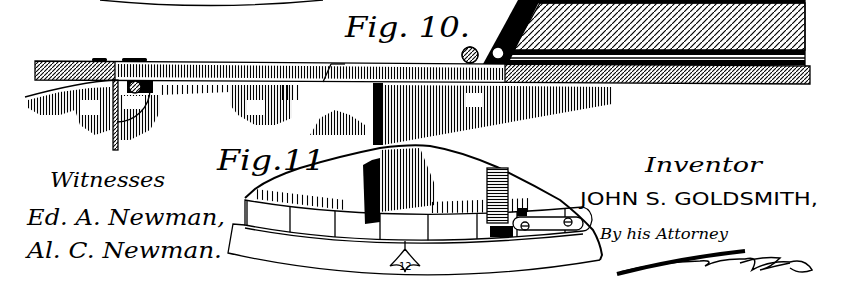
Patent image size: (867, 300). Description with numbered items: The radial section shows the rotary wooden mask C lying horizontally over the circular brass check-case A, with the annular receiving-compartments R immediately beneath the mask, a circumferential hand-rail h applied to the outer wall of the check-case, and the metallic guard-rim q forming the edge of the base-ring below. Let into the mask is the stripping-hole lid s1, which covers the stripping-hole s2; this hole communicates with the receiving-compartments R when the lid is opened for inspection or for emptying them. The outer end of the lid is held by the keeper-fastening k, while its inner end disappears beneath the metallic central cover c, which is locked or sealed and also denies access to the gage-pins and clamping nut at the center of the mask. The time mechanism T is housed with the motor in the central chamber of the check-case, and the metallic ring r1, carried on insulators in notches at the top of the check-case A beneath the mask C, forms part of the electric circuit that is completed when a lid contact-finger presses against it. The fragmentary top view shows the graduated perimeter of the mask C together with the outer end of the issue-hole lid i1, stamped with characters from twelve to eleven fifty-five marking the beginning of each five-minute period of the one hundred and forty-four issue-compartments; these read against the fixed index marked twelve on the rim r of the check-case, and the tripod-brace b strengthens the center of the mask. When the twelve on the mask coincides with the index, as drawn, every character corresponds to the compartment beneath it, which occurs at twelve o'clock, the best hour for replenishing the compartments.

In FIG. 10, the rotary mask C is at (753, 92).
In FIG. 10, the keeper-fastening k is at (119, 52).
In FIG. 10, the guard-rim q is at (208, 6).
In FIG. 10, the stripping-hole lid s1 is at (314, 64).
In FIG. 10, the stripping-hole s2 is at (343, 55).
In FIG. 10, the central cover c is at (487, 36).
In FIG. 11, the central cover c is at (423, 202).
In FIG. 10, the check-case A is at (644, 61).
In FIG. 10, the time mechanism T is at (71, 115).
In FIG. 10, the metallic ring r1 is at (138, 110).
In FIG. 10, the receiving-compartments R is at (262, 110).
In FIG. 10, the hand-rail h is at (492, 114).
In FIG. 11, the tripod-brace b is at (420, 237).
In FIG. 11, the issue-hole lid i1 is at (481, 195).
In FIG. 11, the rim r is at (536, 240).